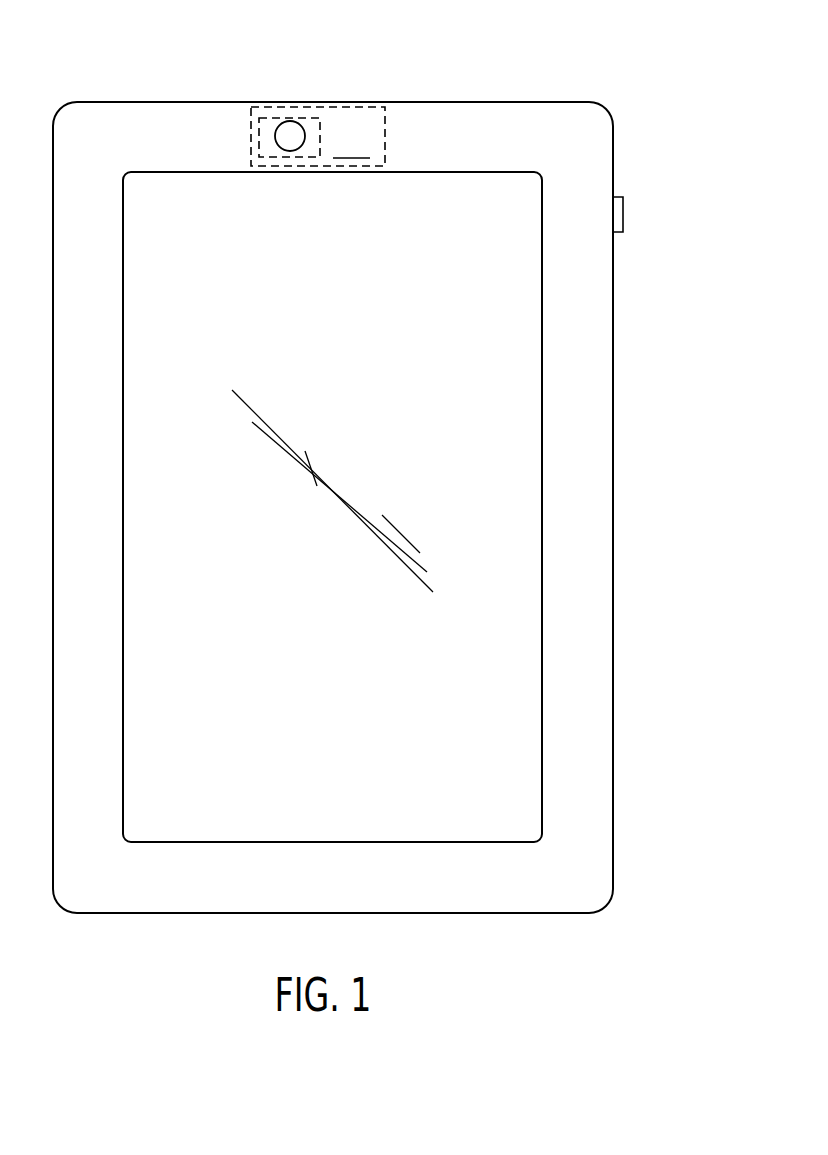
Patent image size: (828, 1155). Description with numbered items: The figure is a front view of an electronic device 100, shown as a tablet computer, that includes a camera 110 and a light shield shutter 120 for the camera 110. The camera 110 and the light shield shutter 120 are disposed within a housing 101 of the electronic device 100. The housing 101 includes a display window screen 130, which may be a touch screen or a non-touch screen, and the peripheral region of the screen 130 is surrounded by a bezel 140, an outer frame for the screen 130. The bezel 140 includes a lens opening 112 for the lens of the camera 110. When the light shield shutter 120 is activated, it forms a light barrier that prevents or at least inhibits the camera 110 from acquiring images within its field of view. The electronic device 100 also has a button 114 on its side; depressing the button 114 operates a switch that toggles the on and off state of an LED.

The electronic device 100 is at (566, 88).
The housing 101 is at (613, 657).
The camera 110 is at (258, 128).
The lens opening 112 is at (278, 145).
The button 114 is at (623, 215).
The light shield shutter 120 is at (385, 139).
The display window screen 130 is at (528, 452).
The bezel 140 is at (587, 517).